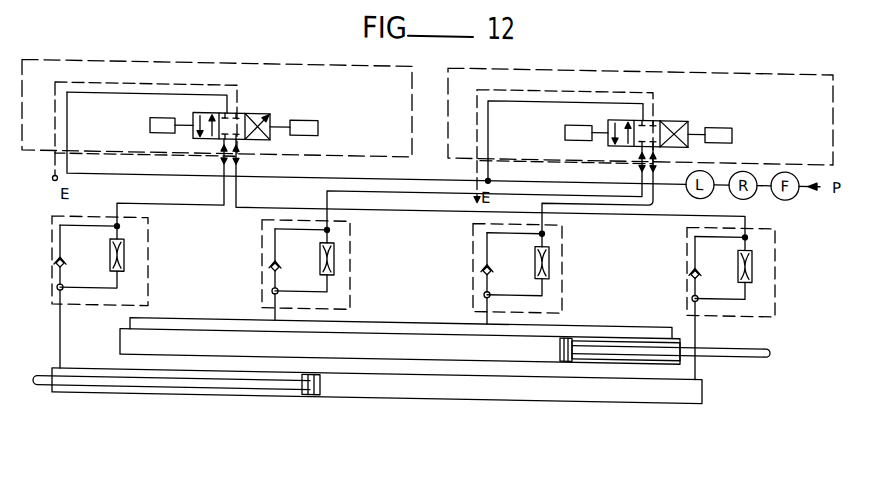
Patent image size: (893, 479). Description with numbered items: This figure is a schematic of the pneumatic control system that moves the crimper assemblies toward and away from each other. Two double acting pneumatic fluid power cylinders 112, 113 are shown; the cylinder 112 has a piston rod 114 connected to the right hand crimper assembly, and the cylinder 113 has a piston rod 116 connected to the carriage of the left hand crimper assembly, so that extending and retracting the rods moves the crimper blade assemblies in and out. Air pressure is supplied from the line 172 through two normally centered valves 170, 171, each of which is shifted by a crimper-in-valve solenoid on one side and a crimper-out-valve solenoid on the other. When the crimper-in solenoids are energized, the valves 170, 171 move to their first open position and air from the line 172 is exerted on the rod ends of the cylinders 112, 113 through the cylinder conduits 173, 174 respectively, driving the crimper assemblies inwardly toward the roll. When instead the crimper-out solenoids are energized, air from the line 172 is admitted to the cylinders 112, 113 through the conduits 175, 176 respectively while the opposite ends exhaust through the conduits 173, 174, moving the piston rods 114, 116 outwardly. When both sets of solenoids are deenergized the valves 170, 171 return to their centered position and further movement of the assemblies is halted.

The fluid power cylinder 112 is at (360, 384).
The fluid power cylinder 113 is at (407, 326).
The piston rod 114 is at (203, 378).
The piston rod 116 is at (628, 334).
The normally centered valve 170 is at (252, 109).
The normally centered valve 171 is at (667, 109).
The air pressure line 172 is at (261, 173).
The cylinder conduit 173 is at (188, 201).
The cylinder conduit 174 is at (655, 190).
The conduit 175 is at (433, 204).
The conduit 176 is at (383, 185).